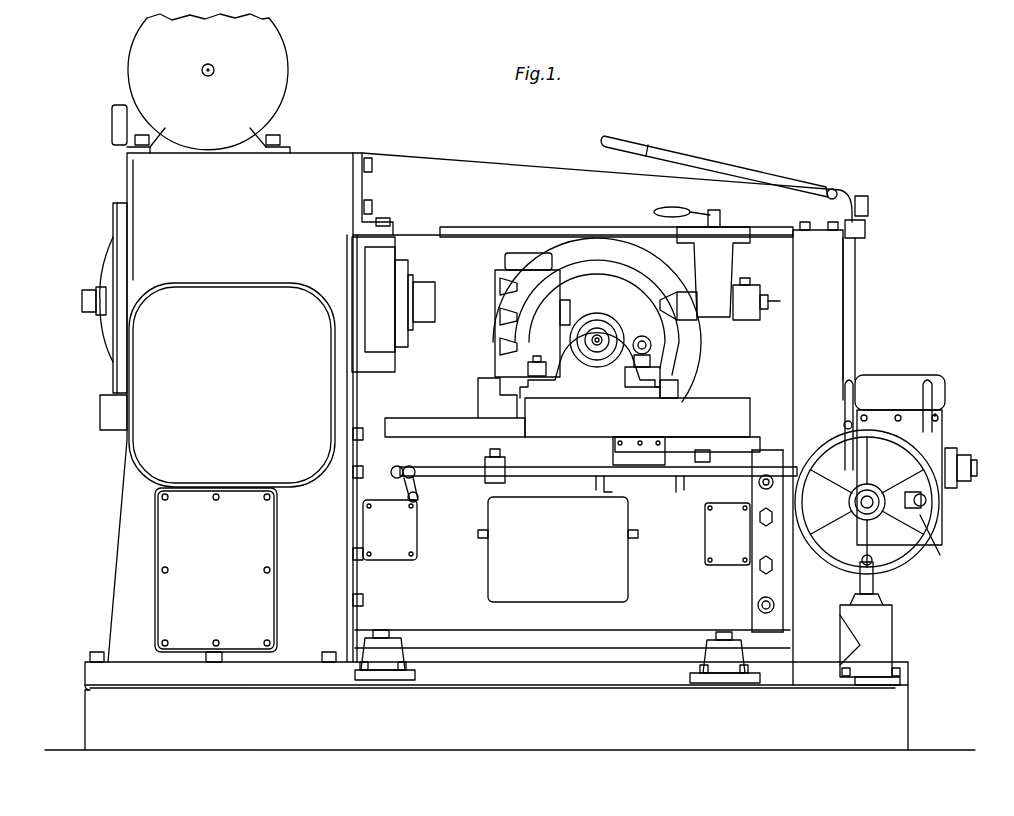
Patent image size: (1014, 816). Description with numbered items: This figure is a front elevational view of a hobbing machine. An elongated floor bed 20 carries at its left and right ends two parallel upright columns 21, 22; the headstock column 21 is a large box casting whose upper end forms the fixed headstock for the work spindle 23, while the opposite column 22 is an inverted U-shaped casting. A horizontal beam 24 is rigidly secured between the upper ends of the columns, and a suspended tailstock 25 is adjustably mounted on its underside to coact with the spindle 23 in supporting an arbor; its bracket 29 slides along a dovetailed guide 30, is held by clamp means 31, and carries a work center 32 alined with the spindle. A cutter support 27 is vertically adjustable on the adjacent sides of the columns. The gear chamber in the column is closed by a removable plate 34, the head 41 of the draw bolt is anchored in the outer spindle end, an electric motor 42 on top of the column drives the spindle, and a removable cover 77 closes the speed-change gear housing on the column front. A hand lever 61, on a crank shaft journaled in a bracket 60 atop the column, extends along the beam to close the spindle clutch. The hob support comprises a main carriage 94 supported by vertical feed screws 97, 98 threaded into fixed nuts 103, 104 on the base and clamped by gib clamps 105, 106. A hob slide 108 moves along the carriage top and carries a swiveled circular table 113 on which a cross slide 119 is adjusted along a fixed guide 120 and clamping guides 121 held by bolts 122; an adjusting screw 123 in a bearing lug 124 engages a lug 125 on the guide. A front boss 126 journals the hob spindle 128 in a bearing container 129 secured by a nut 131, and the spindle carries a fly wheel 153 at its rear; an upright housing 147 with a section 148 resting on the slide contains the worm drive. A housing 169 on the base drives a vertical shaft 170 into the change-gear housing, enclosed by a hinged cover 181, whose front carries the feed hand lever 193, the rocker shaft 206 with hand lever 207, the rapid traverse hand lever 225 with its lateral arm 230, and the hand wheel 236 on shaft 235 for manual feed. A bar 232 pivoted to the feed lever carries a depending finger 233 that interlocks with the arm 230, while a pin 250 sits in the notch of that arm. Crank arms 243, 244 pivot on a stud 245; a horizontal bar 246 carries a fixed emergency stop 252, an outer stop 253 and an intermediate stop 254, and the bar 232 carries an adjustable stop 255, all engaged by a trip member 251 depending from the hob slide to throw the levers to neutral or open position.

The floor bed 20 is at (585, 700).
The headstock column 21 is at (128, 510).
The column 22 is at (848, 345).
The work spindle 23 is at (425, 295).
The horizontal beam 24 is at (512, 128).
The tailstock 25 is at (735, 290).
The cutter support 27 is at (430, 415).
The bracket 29 is at (712, 265).
The dovetailed guide 30 is at (600, 222).
The clamp means 31 is at (708, 206).
The work center 32 is at (675, 312).
The removable plate 34 is at (106, 258).
The head 41 is at (88, 312).
The electric motor 42 is at (275, 78).
The bracket 60 is at (867, 229).
The hand lever 61 is at (778, 172).
The removable cover 77 is at (150, 462).
The main carriage 94 is at (551, 622).
The vertical feed screw 97 is at (382, 630).
The vertical feed screw 98 is at (724, 632).
The fixed nut 103 is at (400, 660).
The fixed nut 104 is at (700, 665).
The gib clamp 105 is at (352, 580).
The gib clamp 106 is at (760, 580).
The hob slide 108 is at (725, 400).
The circular table 113 is at (612, 412).
The cross slide 119 is at (592, 372).
The fixed guide 120 is at (650, 388).
The clamping guides 121 is at (528, 370).
The bolts 122 is at (520, 336).
The adjusting screw 123 is at (652, 360).
The bearing lug 124 is at (645, 335).
The lug 125 is at (660, 372).
The front boss 126 is at (605, 320).
The hob spindle 128 is at (560, 302).
The bearing container 129 is at (582, 358).
The nut 131 is at (590, 340).
The upright housing 147 is at (498, 300).
The housing section 148 is at (520, 268).
The fly wheel 153 is at (622, 250).
The housing 169 is at (892, 620).
The vertical shaft 170 is at (873, 580).
The hinged cover 181 is at (920, 358).
The hand lever 193 is at (840, 396).
The rocker shaft 206 is at (844, 428).
The hand lever 207 is at (876, 430).
The hand lever 225 is at (928, 500).
The lateral arm 230 is at (935, 545).
The bar 232 is at (733, 490).
The depending finger 233 is at (935, 448).
The shaft 235 is at (840, 540).
The hand wheel 236 is at (905, 553).
The crank arm 243 is at (390, 500).
The crank arm 244 is at (418, 480).
The stud 245 is at (418, 500).
The horizontal bar 246 is at (412, 465).
The pin 250 is at (887, 508).
The trip member 251 is at (648, 465).
The emergency stop 252 is at (485, 410).
The outer stop 253 is at (703, 450).
The intermediate stop 254 is at (595, 470).
The adjustable stop 255 is at (497, 483).